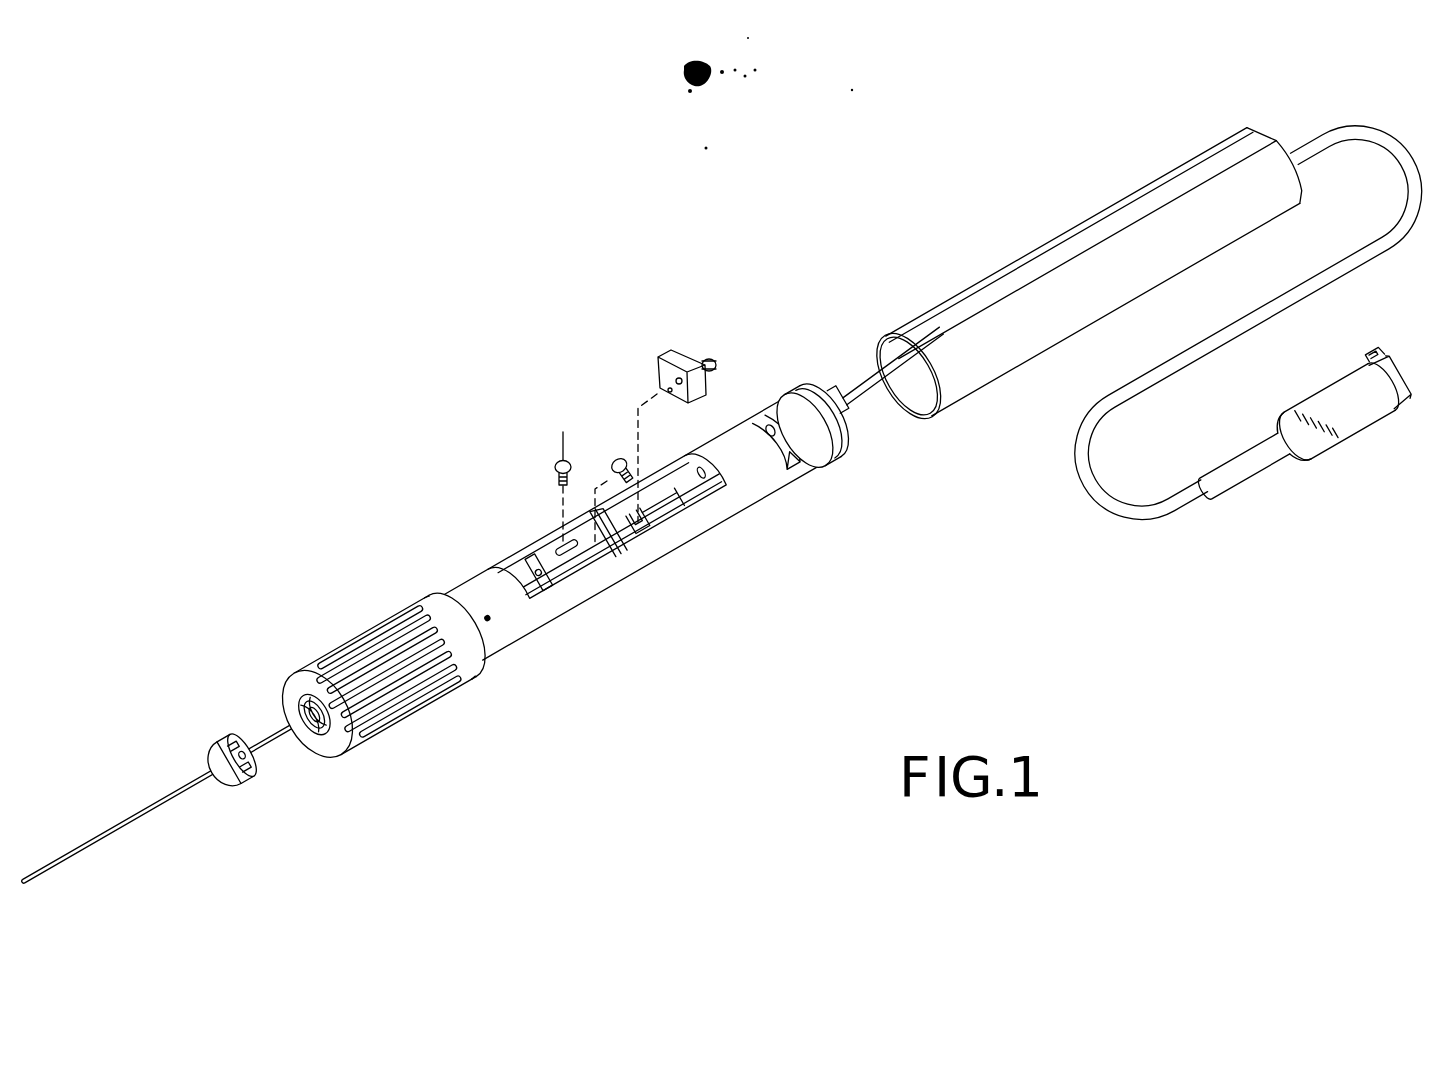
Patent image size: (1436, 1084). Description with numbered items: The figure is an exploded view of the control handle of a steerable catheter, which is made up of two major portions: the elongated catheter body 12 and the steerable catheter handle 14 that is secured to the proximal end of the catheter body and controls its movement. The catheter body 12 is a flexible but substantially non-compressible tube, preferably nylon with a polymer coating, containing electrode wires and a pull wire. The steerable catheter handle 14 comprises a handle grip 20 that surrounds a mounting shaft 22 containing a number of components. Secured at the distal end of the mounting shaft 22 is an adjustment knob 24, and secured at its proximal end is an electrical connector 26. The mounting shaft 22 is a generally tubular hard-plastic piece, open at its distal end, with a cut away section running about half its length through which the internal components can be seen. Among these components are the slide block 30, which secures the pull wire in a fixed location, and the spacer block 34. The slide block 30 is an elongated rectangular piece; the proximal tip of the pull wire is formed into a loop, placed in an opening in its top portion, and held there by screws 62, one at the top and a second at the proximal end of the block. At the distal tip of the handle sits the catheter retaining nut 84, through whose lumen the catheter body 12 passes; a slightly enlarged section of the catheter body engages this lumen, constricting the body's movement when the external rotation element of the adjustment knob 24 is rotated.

The elongated catheter body 12 is at (95, 848).
The steerable catheter handle 14 is at (350, 318).
The handle grip 20 is at (1000, 289).
The mounting shaft 22 is at (661, 573).
The adjustment knob 24 is at (452, 703).
The electrical connector 26 is at (1329, 477).
The slide block 30 is at (533, 553).
The spacer block 34 is at (663, 360).
The screws 62 is at (618, 462).
The catheter retaining nut 84 is at (222, 757).